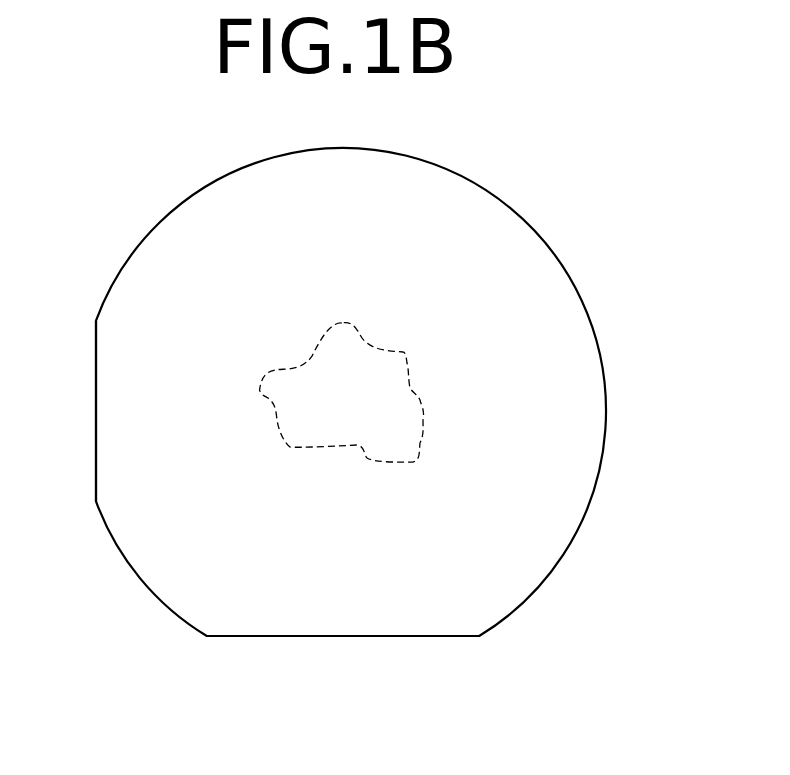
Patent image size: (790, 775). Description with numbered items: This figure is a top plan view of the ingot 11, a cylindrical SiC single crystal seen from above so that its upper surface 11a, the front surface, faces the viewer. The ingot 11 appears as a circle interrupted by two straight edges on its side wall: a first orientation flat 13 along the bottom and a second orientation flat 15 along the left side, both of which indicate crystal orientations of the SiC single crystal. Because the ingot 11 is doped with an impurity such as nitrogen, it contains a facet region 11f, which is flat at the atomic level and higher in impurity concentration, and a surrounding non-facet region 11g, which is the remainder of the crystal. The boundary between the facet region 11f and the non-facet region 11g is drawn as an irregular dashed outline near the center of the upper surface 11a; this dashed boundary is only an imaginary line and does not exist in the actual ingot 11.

The ingot 11 is at (182, 183).
The upper surface 11a is at (516, 240).
The facet region 11f is at (388, 427).
The non-facet region 11g is at (535, 527).
The first orientation flat 13 is at (350, 636).
The second orientation flat 15 is at (96, 428).